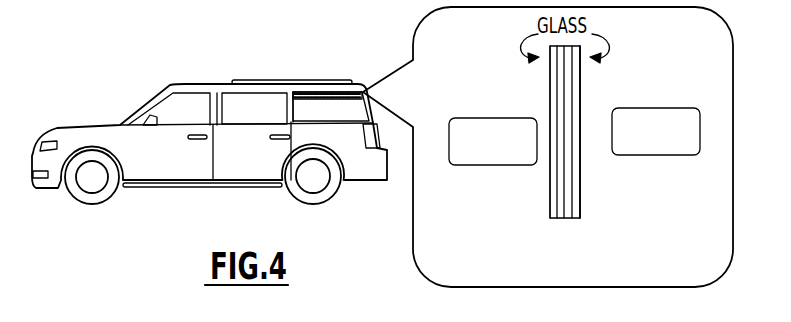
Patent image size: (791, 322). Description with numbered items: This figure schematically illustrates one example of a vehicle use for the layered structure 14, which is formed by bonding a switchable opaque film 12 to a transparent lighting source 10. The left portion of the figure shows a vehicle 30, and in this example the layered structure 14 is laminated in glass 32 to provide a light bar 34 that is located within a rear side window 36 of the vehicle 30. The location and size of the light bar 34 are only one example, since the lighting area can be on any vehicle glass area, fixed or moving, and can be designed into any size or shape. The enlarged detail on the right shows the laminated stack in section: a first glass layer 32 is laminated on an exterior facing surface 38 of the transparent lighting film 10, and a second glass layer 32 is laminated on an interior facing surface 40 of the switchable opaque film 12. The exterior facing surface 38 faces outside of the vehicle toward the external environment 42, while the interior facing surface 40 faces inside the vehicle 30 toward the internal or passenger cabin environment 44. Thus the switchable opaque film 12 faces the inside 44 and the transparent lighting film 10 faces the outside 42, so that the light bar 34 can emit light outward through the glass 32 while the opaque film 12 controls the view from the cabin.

The transparent lighting source 10 is at (572, 219).
The switchable opaque film 12 is at (563, 219).
The layered structure 14 is at (590, 178).
The vehicle 30 is at (96, 89).
The glass 32 is at (550, 97).
The light bar 34 is at (319, 91).
The rear side window 36 is at (317, 110).
The exterior facing surface 38 is at (577, 203).
The interior facing surface 40 is at (557, 203).
The external environment 42 is at (668, 110).
The passenger cabin environment 44 is at (480, 166).